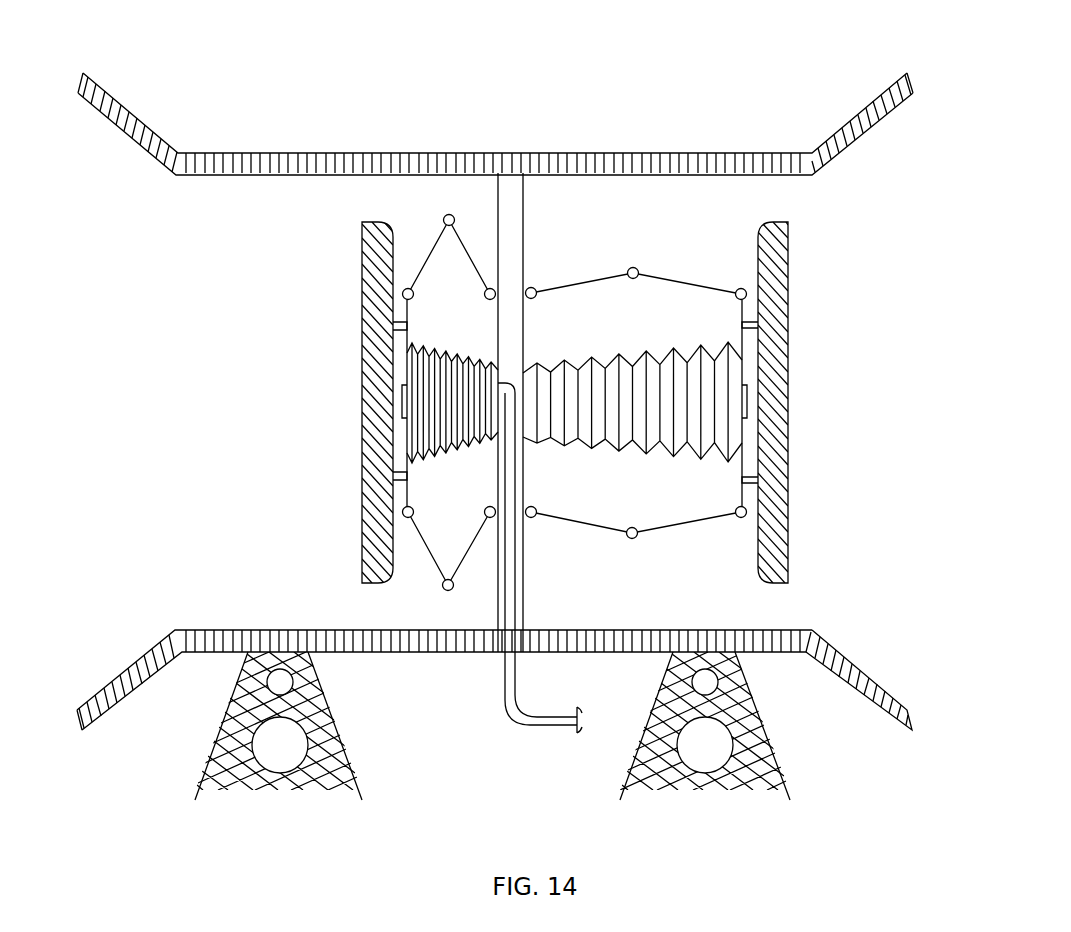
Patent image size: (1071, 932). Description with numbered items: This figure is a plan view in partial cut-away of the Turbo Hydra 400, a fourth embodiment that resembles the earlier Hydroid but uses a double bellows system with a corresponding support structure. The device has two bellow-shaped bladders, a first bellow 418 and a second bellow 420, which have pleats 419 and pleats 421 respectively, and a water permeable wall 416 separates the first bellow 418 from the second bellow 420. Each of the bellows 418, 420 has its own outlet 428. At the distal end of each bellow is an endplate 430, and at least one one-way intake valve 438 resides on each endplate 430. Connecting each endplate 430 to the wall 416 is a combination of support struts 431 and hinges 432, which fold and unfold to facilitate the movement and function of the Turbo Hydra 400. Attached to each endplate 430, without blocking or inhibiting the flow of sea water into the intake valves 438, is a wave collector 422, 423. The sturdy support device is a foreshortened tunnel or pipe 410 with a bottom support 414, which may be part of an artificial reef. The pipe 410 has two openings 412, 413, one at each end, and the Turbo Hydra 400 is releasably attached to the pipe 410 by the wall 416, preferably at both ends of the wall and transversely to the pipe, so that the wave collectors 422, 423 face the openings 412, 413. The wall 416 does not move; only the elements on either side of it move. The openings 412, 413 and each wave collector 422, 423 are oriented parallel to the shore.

The Turbo Hydra 400 is at (771, 41).
The pipe 410 is at (613, 152).
The opening 412 is at (130, 627).
The opening 413 is at (852, 627).
The bottom support 414 is at (283, 792).
The water permeable wall 416 is at (525, 210).
The first bellow 418 is at (705, 440).
The pleats 419 is at (673, 346).
The second bellow 420 is at (447, 427).
The pleats 421 is at (456, 444).
The wave collector 422 is at (361, 342).
The wave collector 423 is at (790, 471).
The outlet 428 is at (512, 728).
The endplate 430 is at (407, 467).
The support struts 431 is at (435, 238).
The hinges 432 is at (449, 214).
The one-way intake valve 438 is at (403, 397).